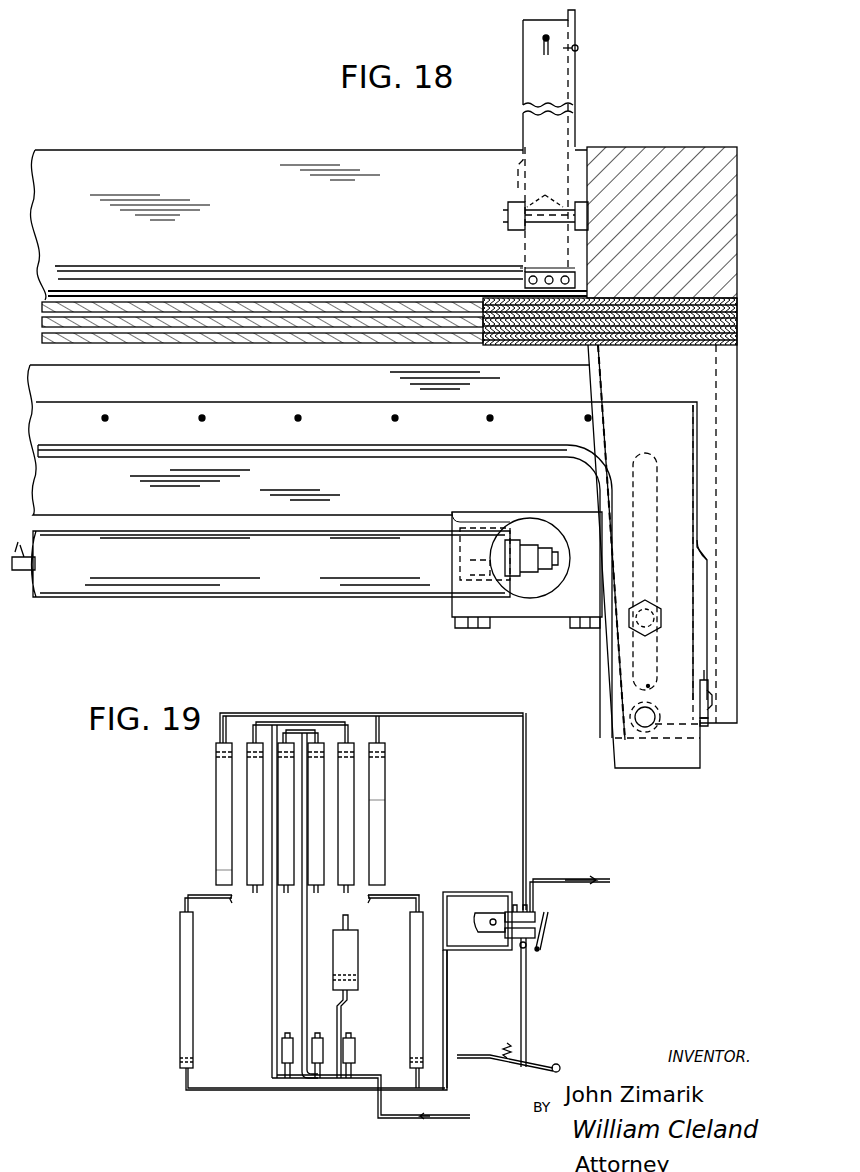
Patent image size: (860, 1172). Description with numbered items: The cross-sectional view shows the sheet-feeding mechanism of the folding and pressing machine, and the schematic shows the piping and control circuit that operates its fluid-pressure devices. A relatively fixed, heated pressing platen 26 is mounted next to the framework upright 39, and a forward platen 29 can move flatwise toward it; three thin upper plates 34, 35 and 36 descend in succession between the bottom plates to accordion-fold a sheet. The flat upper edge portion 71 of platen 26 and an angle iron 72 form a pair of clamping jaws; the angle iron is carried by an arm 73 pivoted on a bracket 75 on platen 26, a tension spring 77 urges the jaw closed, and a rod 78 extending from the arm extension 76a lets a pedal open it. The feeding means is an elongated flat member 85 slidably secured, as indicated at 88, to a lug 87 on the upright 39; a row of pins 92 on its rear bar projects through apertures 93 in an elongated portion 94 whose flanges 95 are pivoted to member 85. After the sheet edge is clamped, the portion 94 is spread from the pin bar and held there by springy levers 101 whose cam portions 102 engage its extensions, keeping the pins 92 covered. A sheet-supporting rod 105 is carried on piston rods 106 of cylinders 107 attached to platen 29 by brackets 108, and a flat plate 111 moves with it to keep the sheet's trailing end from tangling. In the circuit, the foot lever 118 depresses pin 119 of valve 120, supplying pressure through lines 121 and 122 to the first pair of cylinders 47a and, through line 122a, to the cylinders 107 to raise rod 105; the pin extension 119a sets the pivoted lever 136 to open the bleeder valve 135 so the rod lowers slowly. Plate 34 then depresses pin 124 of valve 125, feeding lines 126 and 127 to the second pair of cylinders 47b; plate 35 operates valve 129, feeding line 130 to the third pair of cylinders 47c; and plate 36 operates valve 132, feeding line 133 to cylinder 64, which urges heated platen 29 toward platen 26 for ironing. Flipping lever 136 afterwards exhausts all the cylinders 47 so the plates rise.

In FIG. 18, the pressing platen 26 is at (48, 292).
In FIG. 18, the forward platen 29 is at (84, 366).
In FIG. 18, the upper plate 34 is at (44, 306).
In FIG. 18, the upper plate 35 is at (44, 322).
In FIG. 18, the upper plate 36 is at (44, 340).
In FIG. 18, the framework upright 39 is at (733, 180).
In FIG. 18, the upper edge portion 71 is at (55, 272).
In FIG. 18, the angle iron 72 is at (285, 276).
In FIG. 18, the arm 73 is at (535, 240).
In FIG. 18, the bracket 75 is at (545, 189).
In FIG. 18, the arm extension 76a is at (578, 30).
In FIG. 18, the tension spring 77 is at (580, 48).
In FIG. 18, the rod 78 is at (542, 40).
In FIG. 18, the flat member 85 is at (400, 455).
In FIG. 18, the lug 87 is at (737, 628).
In FIG. 18, the sliding connection 88 is at (645, 603).
In FIG. 18, the pins 92 is at (107, 416).
In FIG. 18, the apertures 93 is at (158, 400).
In FIG. 18, the elongated portion 94 is at (548, 412).
In FIG. 18, the flanges 95 is at (705, 553).
In FIG. 18, the levers 101 is at (710, 700).
In FIG. 18, the cam portions 102 is at (704, 726).
In FIG. 18, the rod 105 is at (425, 590).
In FIG. 19, the rod 105 is at (400, 896).
In FIG. 18, the piston rods 106 is at (530, 548).
In FIG. 18, the brackets 108 is at (560, 612).
In FIG. 18, the flat plate 111 is at (21, 543).
In FIG. 19, the cylinders 47 is at (376, 845).
In FIG. 19, the first pair of cylinders 47a is at (222, 840).
In FIG. 19, the second pair of cylinders 47b is at (256, 893).
In FIG. 19, the inner cylinders 47c is at (287, 893).
In FIG. 19, the cylinder 64 is at (352, 960).
In FIG. 19, the cylinders 107 is at (180, 992).
In FIG. 19, the foot lever 118 is at (470, 1052).
In FIG. 19, the pin 119 is at (536, 912).
In FIG. 19, the pin extension 119a is at (512, 912).
In FIG. 19, the valve 120 is at (536, 926).
In FIG. 19, the line 121 is at (565, 878).
In FIG. 19, the line 122 is at (527, 840).
In FIG. 19, the line 122a is at (447, 1000).
In FIG. 19, the spring-pressed pin 124 is at (285, 1034).
In FIG. 19, the valve 125 is at (282, 1053).
In FIG. 19, the line 126 is at (400, 1120).
In FIG. 19, the line 127 is at (270, 985).
In FIG. 19, the valve 129 is at (330, 1030).
In FIG. 19, the line 130 is at (302, 1006).
In FIG. 19, the valve 132 is at (355, 1050).
In FIG. 19, the line 133 is at (341, 1013).
In FIG. 19, the bleeder valve 135 is at (540, 940).
In FIG. 19, the pivoted lever 136 is at (480, 930).